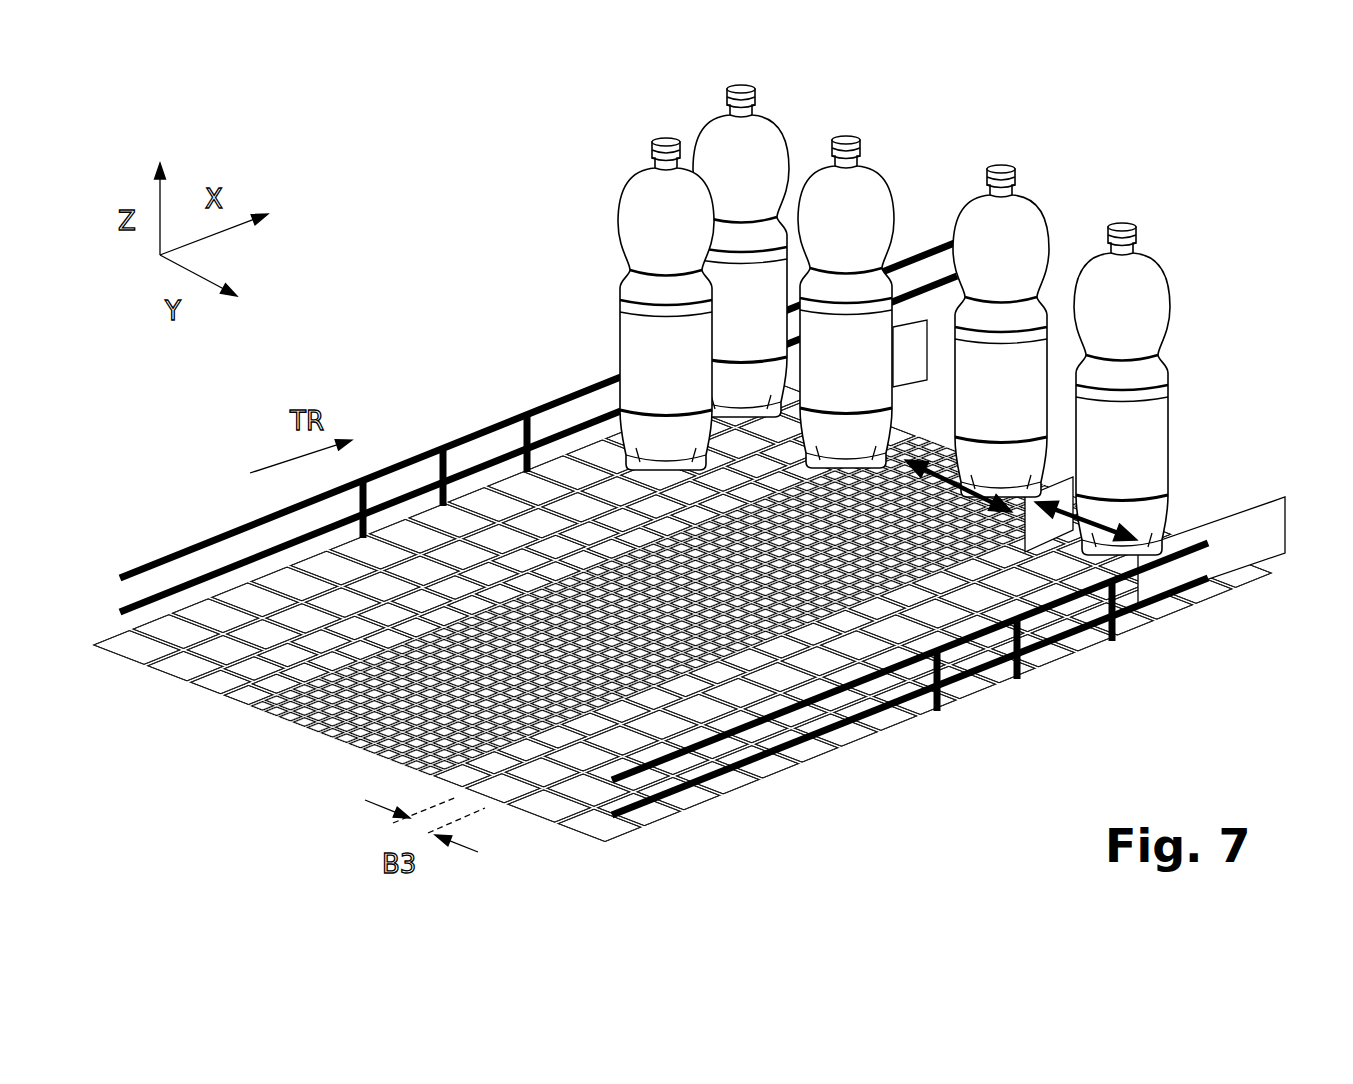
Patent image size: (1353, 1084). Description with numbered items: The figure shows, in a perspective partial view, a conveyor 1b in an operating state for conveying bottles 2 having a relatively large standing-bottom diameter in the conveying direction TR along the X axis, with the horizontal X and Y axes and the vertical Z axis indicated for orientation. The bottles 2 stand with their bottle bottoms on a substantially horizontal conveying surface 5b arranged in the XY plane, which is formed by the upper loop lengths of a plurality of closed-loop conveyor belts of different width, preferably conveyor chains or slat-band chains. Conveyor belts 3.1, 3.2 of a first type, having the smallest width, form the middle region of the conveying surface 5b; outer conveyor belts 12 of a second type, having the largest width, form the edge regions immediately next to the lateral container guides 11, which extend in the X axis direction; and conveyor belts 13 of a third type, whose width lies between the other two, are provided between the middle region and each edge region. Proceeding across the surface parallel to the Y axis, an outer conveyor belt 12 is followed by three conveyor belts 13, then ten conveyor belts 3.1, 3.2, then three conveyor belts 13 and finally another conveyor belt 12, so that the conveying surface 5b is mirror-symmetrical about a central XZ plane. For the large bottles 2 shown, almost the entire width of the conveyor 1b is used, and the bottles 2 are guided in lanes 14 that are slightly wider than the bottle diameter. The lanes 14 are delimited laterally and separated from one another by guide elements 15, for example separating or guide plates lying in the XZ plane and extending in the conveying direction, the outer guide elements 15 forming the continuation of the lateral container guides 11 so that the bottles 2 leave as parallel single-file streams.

The conveyor 1b is at (438, 310).
The bottles 2 is at (888, 205).
The conveying surface 5b is at (628, 520).
The lateral container guides 11 is at (460, 432).
The outer conveyor belts 12 is at (205, 610).
The conveyor belts of a third type 13 is at (245, 700).
The lanes 14 is at (1230, 474).
The guide elements 15 is at (1227, 550).
The conveyor belts of the first type 3.1 is at (318, 733).
The conveyor belts of the first type 3.2 is at (460, 795).